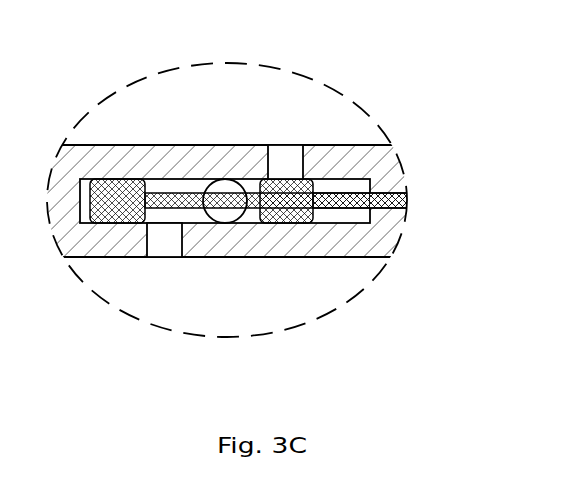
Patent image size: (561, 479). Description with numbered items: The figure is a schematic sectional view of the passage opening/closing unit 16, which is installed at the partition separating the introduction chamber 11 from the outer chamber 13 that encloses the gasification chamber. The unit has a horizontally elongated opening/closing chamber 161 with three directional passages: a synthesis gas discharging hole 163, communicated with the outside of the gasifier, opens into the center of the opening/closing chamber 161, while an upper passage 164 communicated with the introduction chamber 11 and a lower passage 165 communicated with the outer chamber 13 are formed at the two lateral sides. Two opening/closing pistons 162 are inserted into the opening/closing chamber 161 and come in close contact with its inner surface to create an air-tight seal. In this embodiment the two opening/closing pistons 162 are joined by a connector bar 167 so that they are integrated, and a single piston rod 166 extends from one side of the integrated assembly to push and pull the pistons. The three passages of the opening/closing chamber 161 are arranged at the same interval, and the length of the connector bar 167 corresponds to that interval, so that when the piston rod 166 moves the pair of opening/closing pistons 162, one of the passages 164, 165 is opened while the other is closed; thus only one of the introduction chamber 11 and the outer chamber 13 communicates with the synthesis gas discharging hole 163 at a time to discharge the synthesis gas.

The introduction chamber 11 is at (227, 90).
The outer chamber 13 is at (307, 302).
The passage opening/closing unit 16 is at (409, 116).
The opening/closing chamber 161 is at (183, 190).
The opening/closing piston 162 is at (268, 215).
The synthesis gas discharging hole 163 is at (209, 177).
The passage 164 is at (290, 155).
The passage 165 is at (161, 252).
The piston rod 166 is at (348, 206).
The connector bar 167 is at (157, 192).